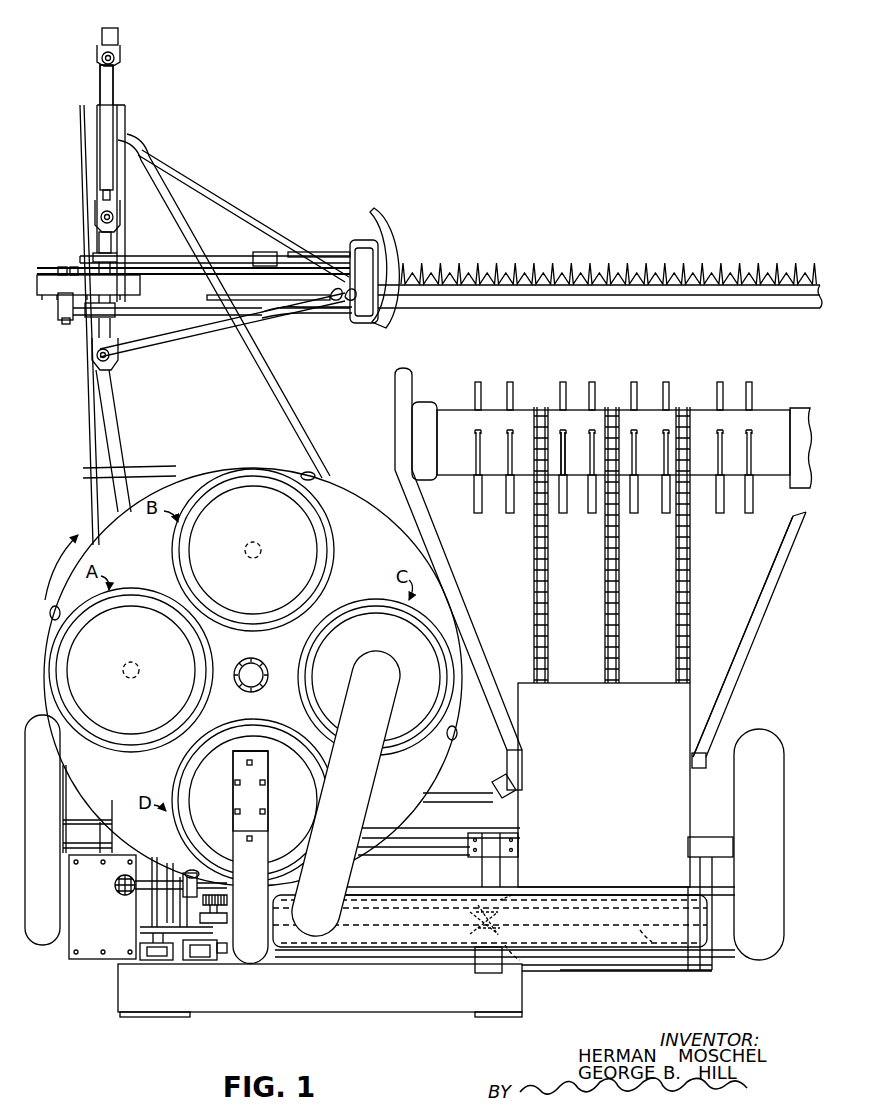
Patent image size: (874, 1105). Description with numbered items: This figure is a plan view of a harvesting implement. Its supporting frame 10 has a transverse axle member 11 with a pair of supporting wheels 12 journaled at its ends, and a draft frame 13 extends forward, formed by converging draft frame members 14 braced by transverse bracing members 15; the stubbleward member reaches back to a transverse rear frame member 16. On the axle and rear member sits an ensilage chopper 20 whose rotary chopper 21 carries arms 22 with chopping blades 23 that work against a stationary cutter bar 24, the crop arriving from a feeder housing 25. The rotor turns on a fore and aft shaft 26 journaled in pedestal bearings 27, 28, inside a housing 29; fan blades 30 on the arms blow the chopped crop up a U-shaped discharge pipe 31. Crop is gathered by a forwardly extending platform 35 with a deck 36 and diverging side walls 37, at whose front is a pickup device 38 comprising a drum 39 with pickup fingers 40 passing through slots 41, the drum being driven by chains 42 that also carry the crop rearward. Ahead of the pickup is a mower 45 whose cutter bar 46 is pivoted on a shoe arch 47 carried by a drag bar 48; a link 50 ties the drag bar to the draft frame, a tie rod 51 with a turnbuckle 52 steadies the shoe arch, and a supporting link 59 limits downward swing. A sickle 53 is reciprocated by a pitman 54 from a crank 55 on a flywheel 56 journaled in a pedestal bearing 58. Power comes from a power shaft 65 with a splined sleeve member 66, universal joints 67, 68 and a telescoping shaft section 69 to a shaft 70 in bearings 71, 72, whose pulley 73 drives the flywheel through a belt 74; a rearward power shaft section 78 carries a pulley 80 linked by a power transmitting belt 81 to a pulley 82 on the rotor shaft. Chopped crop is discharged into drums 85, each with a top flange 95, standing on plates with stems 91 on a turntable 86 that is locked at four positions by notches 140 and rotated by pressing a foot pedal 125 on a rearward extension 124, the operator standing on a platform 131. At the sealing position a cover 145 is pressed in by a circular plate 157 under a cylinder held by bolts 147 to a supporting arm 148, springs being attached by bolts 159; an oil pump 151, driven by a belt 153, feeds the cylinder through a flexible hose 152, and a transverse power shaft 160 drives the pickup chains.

The supporting frame 10 is at (417, 853).
The axle member 11 is at (441, 838).
The supporting wheels 12 is at (757, 735).
The draft frame 13 is at (272, 386).
The draft frame members 14 is at (162, 214).
The bracing members 15 is at (180, 322).
The rear frame member 16 is at (658, 964).
The ensilage chopper 20 is at (590, 950).
The rotary chopper 21 is at (396, 932).
The arms 22 is at (470, 926).
The chopping blades 23 is at (515, 900).
The cutter bar 24 is at (600, 896).
The feeder housing 25 is at (595, 780).
The shaft 26 is at (482, 872).
The pedestal bearing 27 is at (486, 833).
The pedestal bearing 28 is at (493, 974).
The housing 29 is at (565, 958).
The fan blades 30 is at (326, 930).
The discharge pipe 31 is at (322, 805).
The platform 35 is at (758, 622).
The deck 36 is at (716, 583).
The side walls 37 is at (430, 540).
The pickup device 38 is at (455, 407).
The drum 39 is at (493, 410).
The pickup fingers 40 is at (591, 384).
The slots 41 is at (565, 450).
The chains 42 is at (549, 590).
The mower 45 is at (415, 232).
The cutter bar 46 is at (505, 300).
The shoe arch 47 is at (358, 245).
The drag bar 48 is at (266, 317).
The link 50 is at (212, 212).
The tie rod 51 is at (312, 255).
The turnbuckle 52 is at (262, 252).
The sickle 53 is at (525, 268).
The pitman 54 is at (212, 262).
The crank 55 is at (60, 272).
The flywheel 56 is at (60, 304).
The pedestal bearing 58 is at (67, 326).
The supporting link 59 is at (230, 295).
The power shaft 65 is at (124, 70).
The splined sleeve member 66 is at (118, 30).
The universal joint 67 is at (97, 55).
The universal joint 68 is at (95, 218).
The telescoping shaft section 69 is at (113, 140).
The shaft 70 is at (112, 240).
The bearing 71 is at (118, 256).
The bearing 72 is at (118, 310).
The pulley 73 is at (140, 276).
The belt 74 is at (72, 282).
The power shaft section 78 is at (152, 903).
The pulley 80 is at (134, 1017).
The power transmitting belt 81 is at (324, 1013).
The pulley 82 is at (503, 1017).
The drums 85 is at (349, 603).
The turntable 86 is at (353, 494).
The stem 91 is at (260, 544).
The flange 95 is at (224, 488).
The rearward extension 124 is at (168, 880).
The foot pedal 125 is at (115, 885).
The platform 131 is at (80, 940).
The notches 140 is at (316, 472).
The cover 145 is at (192, 652).
The bolts 147 is at (268, 790).
The supporting arm 148 is at (264, 848).
The oil pump 151 is at (208, 960).
The flexible hose 152 is at (228, 946).
The belt 153 is at (175, 961).
The circular plate 157 is at (246, 740).
The bolts 159 is at (247, 764).
The power shaft 160 is at (440, 797).